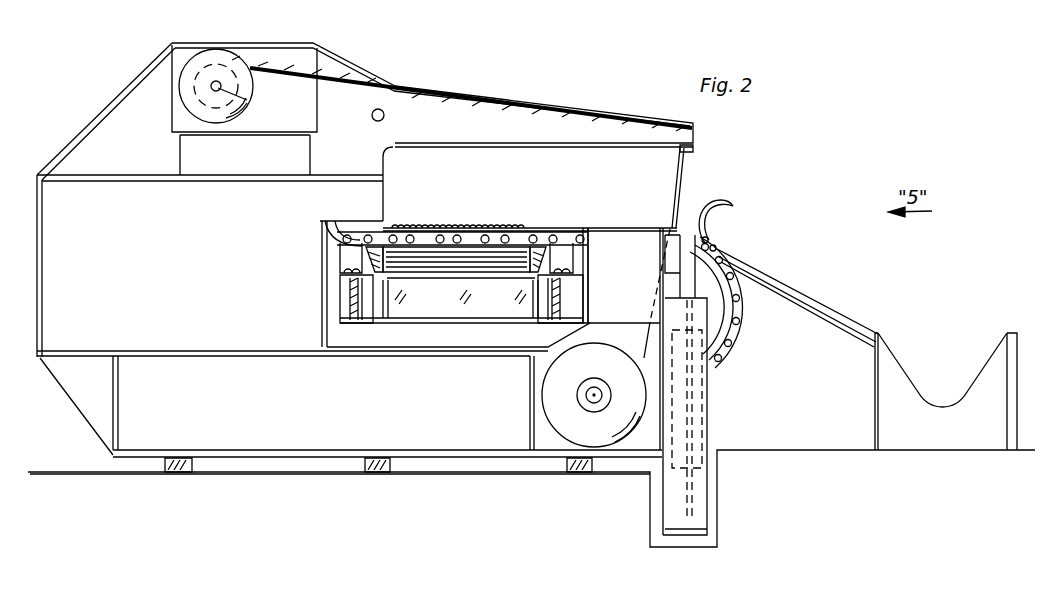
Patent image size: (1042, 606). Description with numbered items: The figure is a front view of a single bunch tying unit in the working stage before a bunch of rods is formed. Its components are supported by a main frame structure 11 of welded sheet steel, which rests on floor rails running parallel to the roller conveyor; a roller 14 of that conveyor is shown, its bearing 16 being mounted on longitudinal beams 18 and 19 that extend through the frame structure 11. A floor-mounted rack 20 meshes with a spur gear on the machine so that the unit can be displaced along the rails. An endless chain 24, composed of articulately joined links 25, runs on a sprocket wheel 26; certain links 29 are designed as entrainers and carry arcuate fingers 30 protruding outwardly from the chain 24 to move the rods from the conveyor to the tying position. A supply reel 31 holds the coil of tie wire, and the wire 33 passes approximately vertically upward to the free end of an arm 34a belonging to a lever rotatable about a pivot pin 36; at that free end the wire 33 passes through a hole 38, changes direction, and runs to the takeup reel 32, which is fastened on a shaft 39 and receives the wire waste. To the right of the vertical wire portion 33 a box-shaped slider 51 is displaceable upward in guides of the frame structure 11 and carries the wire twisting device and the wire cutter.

The main frame structure 11 is at (38, 212).
The roller 14 is at (493, 262).
The bearing 16 is at (346, 254).
The longitudinal beam 18 is at (352, 297).
The longitudinal beam 19 is at (566, 300).
The rack 20 is at (376, 473).
The endless chain 24 is at (742, 344).
The links 25 is at (403, 236).
The sprocket wheel 26 is at (731, 264).
The entrainer links 29 is at (356, 236).
The arcuate fingers 30 is at (719, 205).
The supply reel 31 is at (554, 393).
The takeup reel 32 is at (198, 64).
The wire 33 is at (502, 189).
The arm 34a is at (527, 135).
The pivot pin 36 is at (384, 117).
The hole 38 is at (688, 153).
The shaft 39 is at (247, 100).
The slider 51 is at (703, 428).